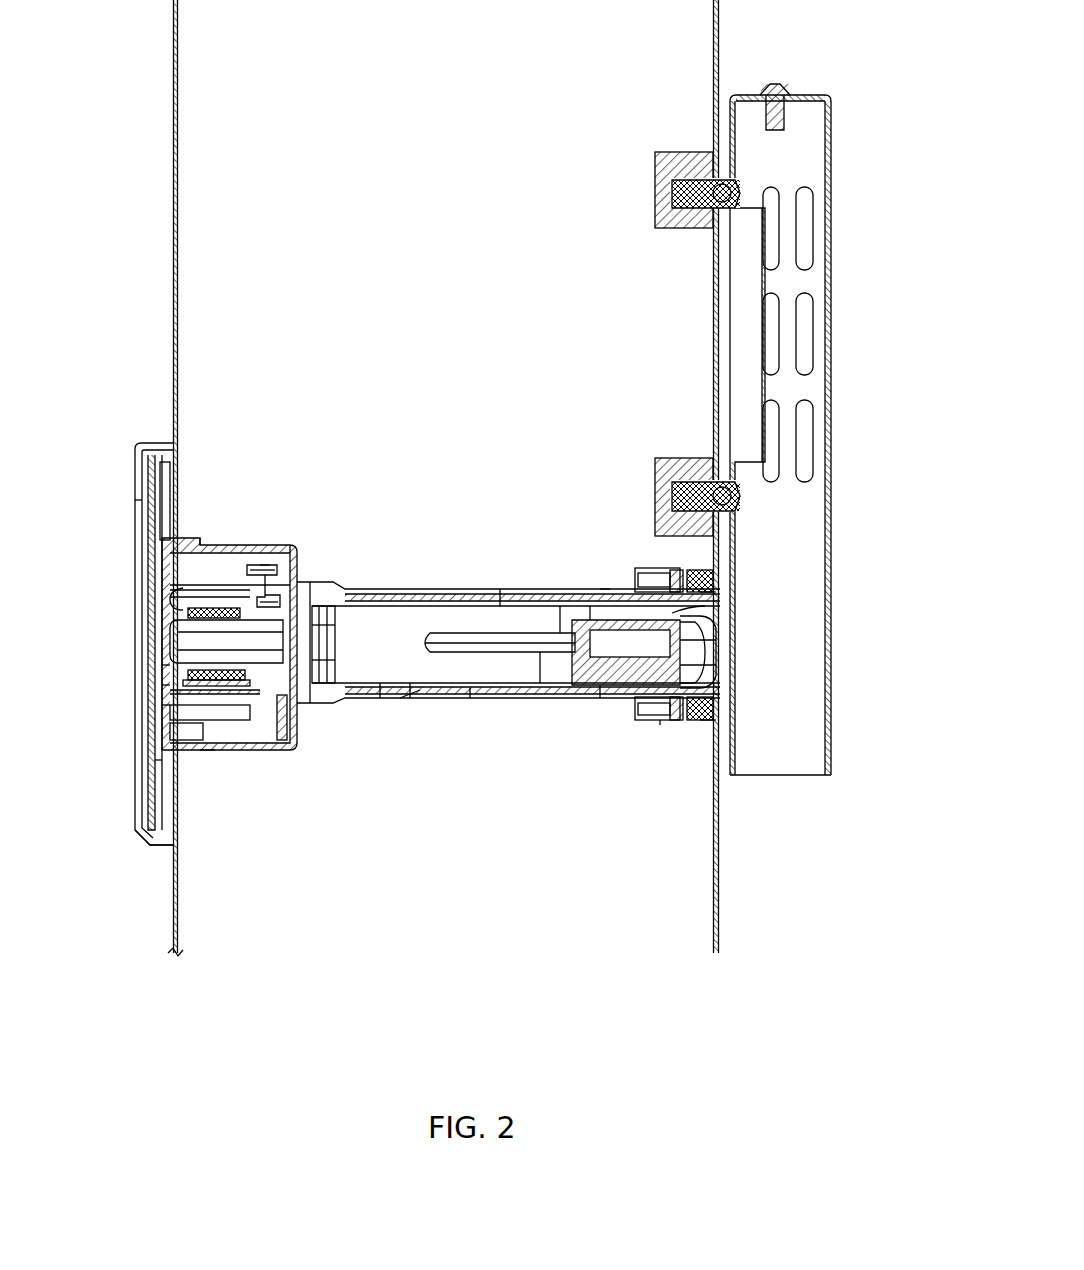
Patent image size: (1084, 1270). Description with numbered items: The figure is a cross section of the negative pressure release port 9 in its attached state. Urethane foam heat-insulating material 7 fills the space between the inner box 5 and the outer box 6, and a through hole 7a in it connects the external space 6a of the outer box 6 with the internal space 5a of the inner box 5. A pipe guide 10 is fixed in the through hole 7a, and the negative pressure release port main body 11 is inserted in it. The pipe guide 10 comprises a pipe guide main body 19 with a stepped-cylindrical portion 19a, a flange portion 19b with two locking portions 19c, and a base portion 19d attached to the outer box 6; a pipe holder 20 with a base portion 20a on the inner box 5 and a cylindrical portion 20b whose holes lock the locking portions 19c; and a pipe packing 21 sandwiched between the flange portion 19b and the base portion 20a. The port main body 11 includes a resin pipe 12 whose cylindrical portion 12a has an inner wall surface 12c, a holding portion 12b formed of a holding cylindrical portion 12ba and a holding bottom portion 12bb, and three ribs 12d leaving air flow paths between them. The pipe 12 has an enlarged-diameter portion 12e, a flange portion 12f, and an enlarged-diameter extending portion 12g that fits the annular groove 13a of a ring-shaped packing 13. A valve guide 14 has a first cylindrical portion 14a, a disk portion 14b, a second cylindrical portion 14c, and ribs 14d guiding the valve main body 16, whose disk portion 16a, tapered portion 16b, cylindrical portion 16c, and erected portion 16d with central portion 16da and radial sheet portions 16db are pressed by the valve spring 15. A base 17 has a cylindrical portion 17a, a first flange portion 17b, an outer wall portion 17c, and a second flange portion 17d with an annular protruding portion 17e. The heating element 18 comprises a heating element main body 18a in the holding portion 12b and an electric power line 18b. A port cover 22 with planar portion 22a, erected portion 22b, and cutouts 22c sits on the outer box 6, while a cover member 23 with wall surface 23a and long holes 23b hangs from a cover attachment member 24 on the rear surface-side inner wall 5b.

The inner box 5 is at (720, 884).
The internal space 5a is at (880, 838).
The rear surface-side inner wall 5b is at (720, 778).
The outer box 6 is at (180, 940).
The external space 6a is at (129, 948).
The urethane foam heat-insulating material 7 is at (435, 757).
The through hole 7a is at (455, 705).
The negative pressure release port 9 is at (122, 790).
The pipe guide 10 is at (470, 700).
The negative pressure release port main body 11 is at (512, 590).
The pipe 12 is at (600, 585).
The cylindrical portion 12a is at (615, 588).
The holding portion 12b is at (897, 622).
The holding cylindrical portion 12ba is at (700, 620).
The holding bottom portion 12bb is at (700, 668).
The inner wall surface 12c is at (585, 600).
The ribs 12d is at (606, 705).
The enlarged-diameter portion 12e is at (290, 712).
The flange portion 12f is at (295, 560).
The enlarged-diameter extending portion 12g is at (265, 568).
The packing 13 is at (165, 580).
The annular groove 13a is at (170, 595).
The valve guide 14 is at (340, 647).
The first cylindrical portion 14a is at (340, 660).
The disk portion 14b is at (250, 728).
The second cylindrical portion 14c is at (175, 800).
The ribs 14d is at (160, 560).
The valve spring 15 is at (340, 628).
The valve main body 16 is at (160, 640).
The disk portion 16a is at (170, 610).
The tapered portion 16b is at (178, 590).
The cylindrical portion 16c is at (205, 545).
The erected portion 16d is at (375, 540).
The central portion 16da is at (290, 590).
The radial sheet portions 16db is at (290, 575).
The base 17 is at (170, 720).
The cylindrical portion 17a is at (210, 755).
The first flange portion 17b is at (165, 700).
The outer wall portion 17c is at (160, 762).
The second flange portion 17d is at (165, 683).
The annular protruding portion 17e is at (165, 668).
The heating element 18 is at (580, 770).
The heating element main body 18a is at (575, 700).
The electric power line 18b is at (540, 700).
The pipe guide main body 19 is at (380, 702).
The stepped-cylindrical portion 19a is at (410, 702).
The flange portion 19b is at (705, 722).
The locking portions 19c is at (700, 540).
The base portion 19d is at (180, 485).
The pipe holder 20 is at (700, 560).
The base portion 20a is at (705, 698).
The cylindrical portion 20b is at (660, 725).
The pipe packing 21 is at (700, 590).
The port cover 22 is at (142, 458).
The planar portion 22a is at (134, 495).
The erected portion 22b is at (145, 845).
The cutouts 22c is at (168, 850).
The cover member 23 is at (832, 333).
The wall surface 23a is at (831, 492).
The long holes 23b is at (805, 186).
The cover attachment member 24 is at (813, 393).